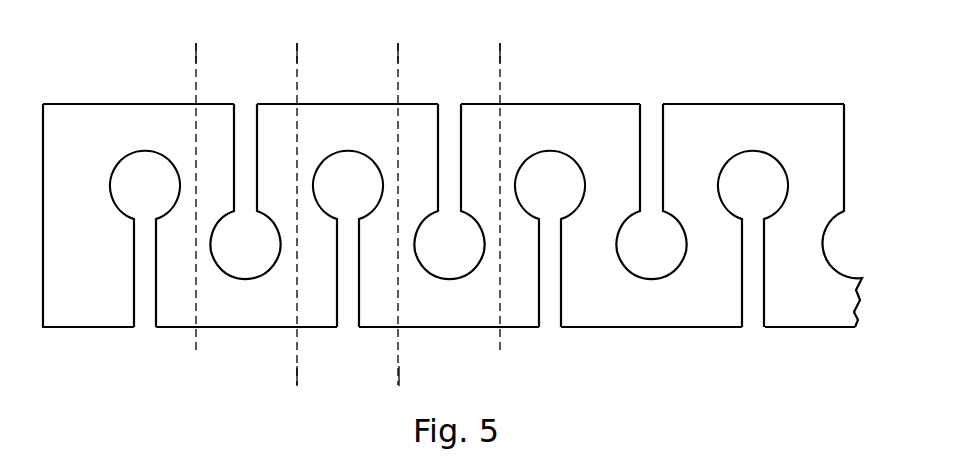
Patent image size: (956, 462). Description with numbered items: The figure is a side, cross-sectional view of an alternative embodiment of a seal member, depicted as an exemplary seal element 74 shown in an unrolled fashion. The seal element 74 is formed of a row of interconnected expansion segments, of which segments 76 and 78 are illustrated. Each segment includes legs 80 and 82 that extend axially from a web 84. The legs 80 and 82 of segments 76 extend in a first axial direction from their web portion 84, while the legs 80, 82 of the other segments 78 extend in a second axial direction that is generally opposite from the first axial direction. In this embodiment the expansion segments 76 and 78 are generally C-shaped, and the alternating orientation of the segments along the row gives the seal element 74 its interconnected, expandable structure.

The seal element 74 is at (693, 73).
The expansion segment 76 is at (287, 53).
The expansion segment 78 is at (389, 376).
The leg 80 is at (217, 122).
The leg 82 is at (277, 120).
The web 84 is at (135, 120).